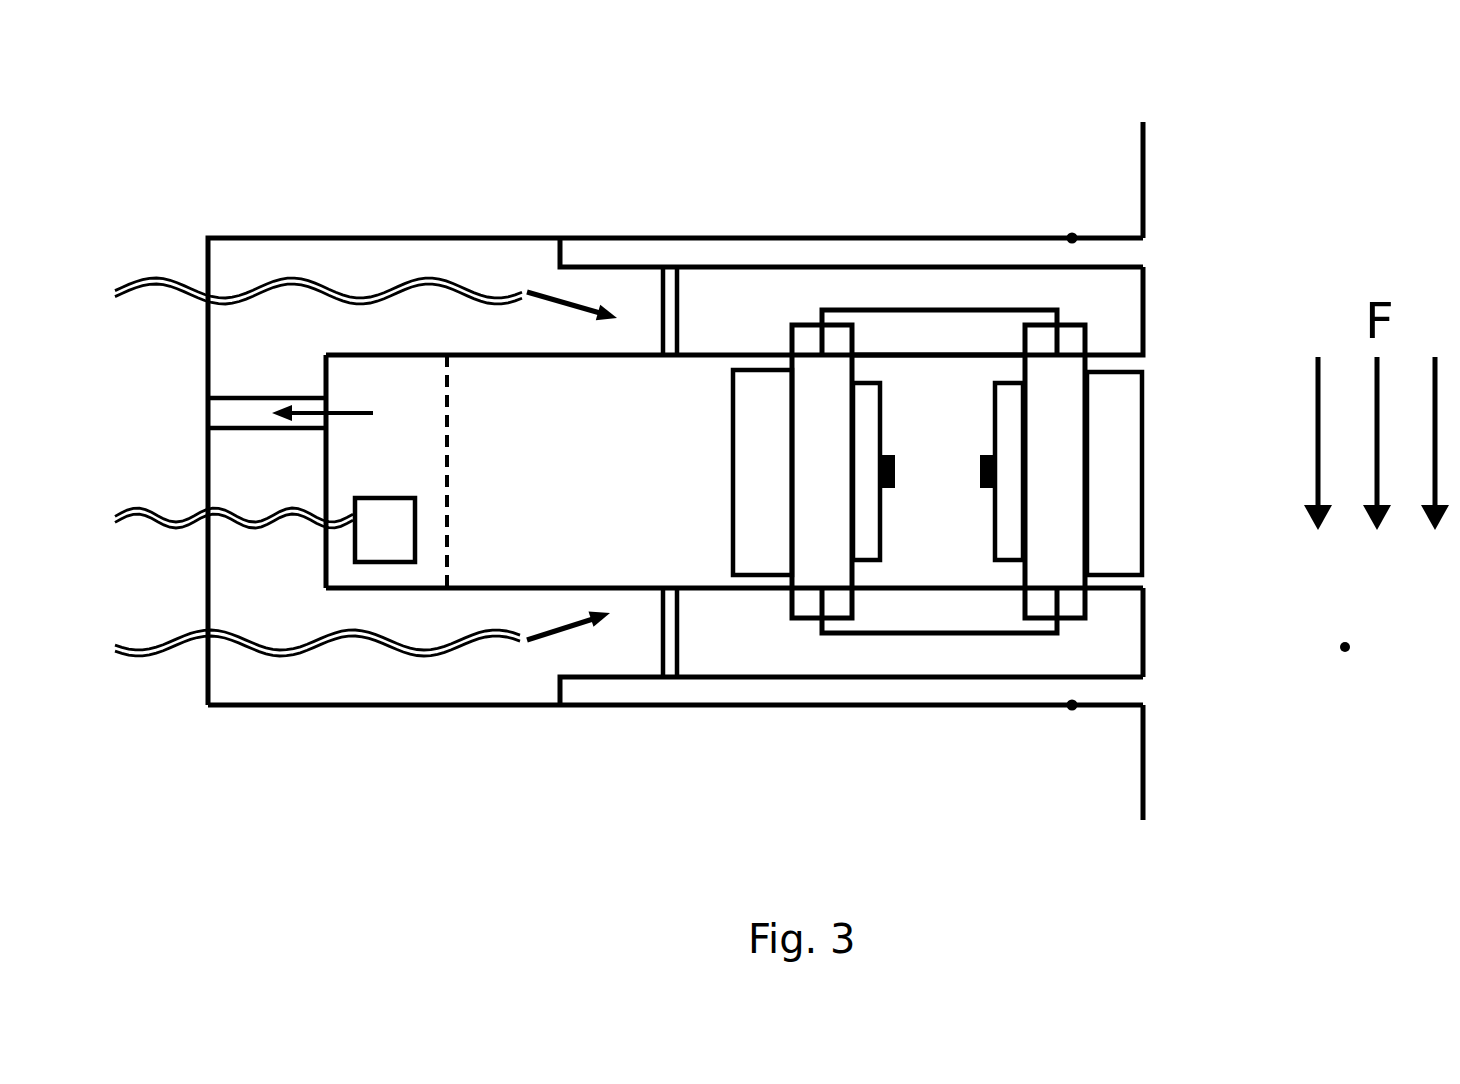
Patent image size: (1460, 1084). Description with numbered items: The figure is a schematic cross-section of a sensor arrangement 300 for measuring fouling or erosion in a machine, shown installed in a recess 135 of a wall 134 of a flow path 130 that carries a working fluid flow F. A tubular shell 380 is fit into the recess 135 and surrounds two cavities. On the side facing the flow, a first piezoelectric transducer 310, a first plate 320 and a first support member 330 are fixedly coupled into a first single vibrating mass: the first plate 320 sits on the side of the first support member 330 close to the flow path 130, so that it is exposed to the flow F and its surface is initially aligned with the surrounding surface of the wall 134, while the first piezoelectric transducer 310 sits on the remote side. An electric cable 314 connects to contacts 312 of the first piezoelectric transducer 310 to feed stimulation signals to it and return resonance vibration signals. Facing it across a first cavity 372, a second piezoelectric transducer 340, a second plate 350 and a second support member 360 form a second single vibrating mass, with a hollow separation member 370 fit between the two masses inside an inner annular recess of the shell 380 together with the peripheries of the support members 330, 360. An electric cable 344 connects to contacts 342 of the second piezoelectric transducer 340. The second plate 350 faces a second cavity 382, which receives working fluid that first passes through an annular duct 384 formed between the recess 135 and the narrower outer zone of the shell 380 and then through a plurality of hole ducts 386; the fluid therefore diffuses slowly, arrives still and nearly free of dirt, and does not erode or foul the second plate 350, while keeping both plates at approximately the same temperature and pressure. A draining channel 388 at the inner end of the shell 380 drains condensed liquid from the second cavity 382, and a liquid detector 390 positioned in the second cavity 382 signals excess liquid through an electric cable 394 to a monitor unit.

The sensor arrangement 300 is at (395, 93).
The wall 134 is at (1128, 178).
The recess 135 is at (1072, 238).
The flow path 130 is at (1423, 667).
The first piezoelectric transducer 310 is at (1013, 447).
The contacts 312 is at (978, 463).
The electric cable 314 is at (165, 282).
The first plate 320 is at (1120, 522).
The first support member 330 is at (1055, 410).
The second piezoelectric transducer 340 is at (863, 447).
The contacts 342 is at (895, 480).
The electric cable 344 is at (167, 652).
The second plate 350 is at (753, 522).
The second support member 360 is at (820, 410).
The separation member 370 is at (985, 332).
The first cavity 372 is at (910, 377).
The tubular shell 380 is at (385, 258).
The second cavity 382 is at (500, 377).
The annular duct 384 is at (797, 252).
The hole ducts 386 is at (668, 285).
The draining channel 388 is at (228, 412).
The liquid detector 390 is at (367, 540).
The electric cable 394 is at (172, 513).